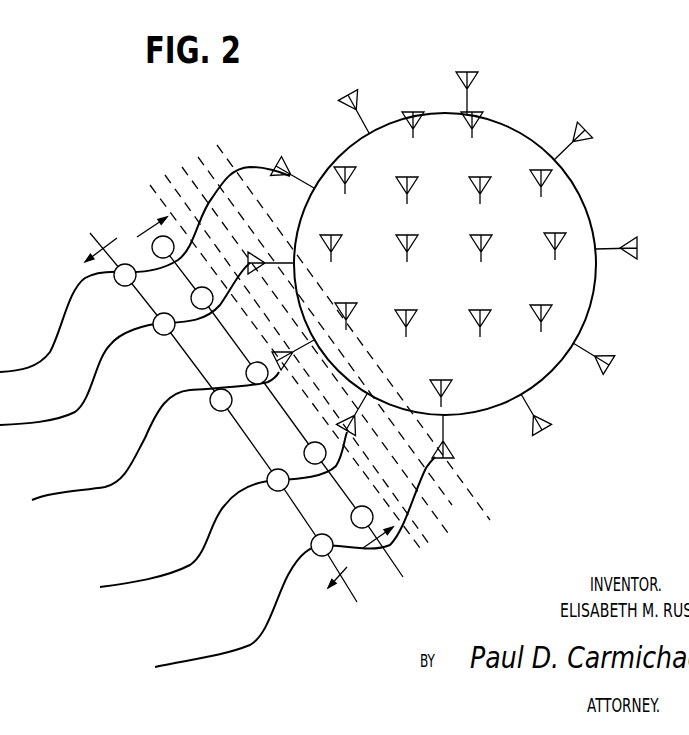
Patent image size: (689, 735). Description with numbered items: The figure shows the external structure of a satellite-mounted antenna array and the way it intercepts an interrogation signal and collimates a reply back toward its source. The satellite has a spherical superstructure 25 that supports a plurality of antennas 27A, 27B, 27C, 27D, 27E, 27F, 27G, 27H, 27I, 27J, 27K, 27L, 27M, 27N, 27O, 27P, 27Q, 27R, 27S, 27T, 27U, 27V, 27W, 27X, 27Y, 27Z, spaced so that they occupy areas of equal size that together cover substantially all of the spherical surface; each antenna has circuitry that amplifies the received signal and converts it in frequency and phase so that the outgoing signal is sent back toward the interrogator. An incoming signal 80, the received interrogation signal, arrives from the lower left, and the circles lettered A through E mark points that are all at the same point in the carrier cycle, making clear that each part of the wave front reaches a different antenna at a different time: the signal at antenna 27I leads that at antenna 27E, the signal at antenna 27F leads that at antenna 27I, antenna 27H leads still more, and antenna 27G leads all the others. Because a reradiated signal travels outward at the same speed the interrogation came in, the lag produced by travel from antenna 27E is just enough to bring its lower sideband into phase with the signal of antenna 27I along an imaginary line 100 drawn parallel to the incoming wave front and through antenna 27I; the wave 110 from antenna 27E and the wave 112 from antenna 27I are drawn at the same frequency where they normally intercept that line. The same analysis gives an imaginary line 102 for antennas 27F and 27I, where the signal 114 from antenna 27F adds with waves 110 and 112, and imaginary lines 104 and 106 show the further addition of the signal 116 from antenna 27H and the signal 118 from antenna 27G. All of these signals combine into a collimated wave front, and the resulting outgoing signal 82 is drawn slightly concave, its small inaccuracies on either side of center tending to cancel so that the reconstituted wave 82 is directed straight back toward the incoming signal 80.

The spherical superstructure 25 is at (527, 147).
The antenna 27A is at (638, 241).
The antenna 27B is at (591, 137).
The antenna 27C is at (473, 77).
The antenna 27D is at (354, 98).
The antenna 27E is at (282, 157).
The antenna 27F is at (250, 252).
The antenna 27G is at (290, 362).
The antenna 27H is at (358, 426).
The antenna 27I is at (456, 450).
The antenna 27J is at (548, 427).
The antenna 27K is at (613, 358).
The antenna 27L is at (419, 112).
The antenna 27M is at (480, 112).
The antenna 27N is at (352, 168).
The antenna 27O is at (413, 178).
The antenna 27P is at (481, 177).
The antenna 27Q is at (553, 180).
The antenna 27R is at (336, 235).
The antenna 27S is at (410, 235).
The antenna 27T is at (484, 235).
The antenna 27U is at (566, 237).
The antenna 27V is at (340, 303).
The antenna 27W is at (409, 310).
The antenna 27X is at (482, 310).
The antenna 27Y is at (546, 305).
The antenna 27Z is at (451, 380).
The incoming signal 80 is at (290, 420).
The outgoing signal 82 is at (240, 428).
The imaginary line 100 is at (483, 510).
The imaginary line 102 is at (448, 533).
The imaginary line 104 is at (432, 548).
The imaginary line 106 is at (420, 548).
The wave 110 is at (243, 168).
The wave 112 is at (283, 579).
The signal 114 is at (101, 372).
The signal 116 is at (221, 510).
The signal 118 is at (149, 443).